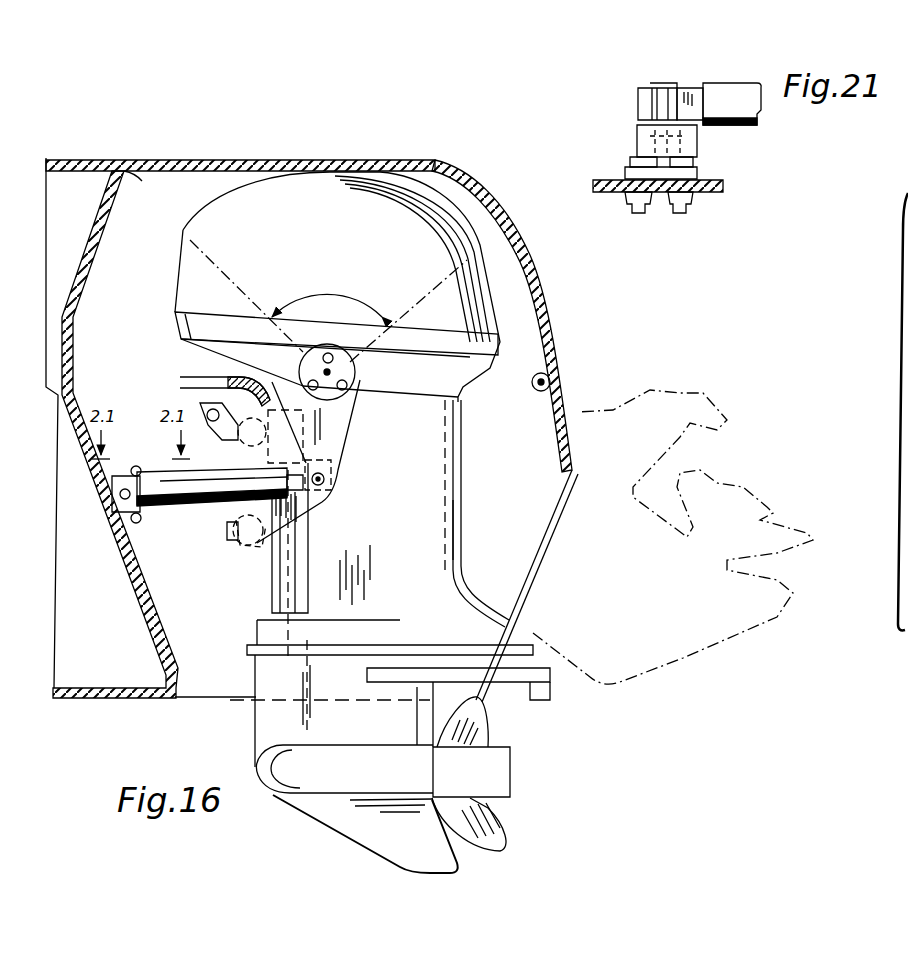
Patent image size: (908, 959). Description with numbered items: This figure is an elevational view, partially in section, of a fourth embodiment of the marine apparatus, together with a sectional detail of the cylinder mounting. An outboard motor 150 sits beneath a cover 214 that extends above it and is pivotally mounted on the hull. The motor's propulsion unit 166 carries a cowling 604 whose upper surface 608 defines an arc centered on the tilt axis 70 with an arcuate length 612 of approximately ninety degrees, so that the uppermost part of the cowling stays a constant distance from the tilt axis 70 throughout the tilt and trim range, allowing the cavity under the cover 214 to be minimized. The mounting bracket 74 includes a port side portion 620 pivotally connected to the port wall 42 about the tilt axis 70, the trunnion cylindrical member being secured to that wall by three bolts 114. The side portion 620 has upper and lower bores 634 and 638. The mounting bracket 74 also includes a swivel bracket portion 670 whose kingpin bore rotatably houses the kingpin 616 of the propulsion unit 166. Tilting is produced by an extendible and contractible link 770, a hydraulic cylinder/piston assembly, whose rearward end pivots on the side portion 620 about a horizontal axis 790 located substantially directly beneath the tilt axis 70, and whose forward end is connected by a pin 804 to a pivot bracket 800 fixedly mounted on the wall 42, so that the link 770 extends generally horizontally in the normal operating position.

In FIG. 16, the cover 214 is at (300, 162).
In FIG. 16, the upper surface 608 is at (450, 215).
In FIG. 16, the arcuate length 612 is at (352, 310).
In FIG. 16, the cowling 604 is at (460, 298).
In FIG. 16, the tilt axis 70 is at (350, 360).
In FIG. 16, the bolt 114 is at (305, 376).
In FIG. 16, the port side portion 620 is at (343, 414).
In FIG. 16, the outboard motor 150 is at (465, 466).
In FIG. 16, the propulsion unit 166 is at (465, 520).
In FIG. 16, the horizontal axis 790 is at (332, 480).
In FIG. 16, the upper bore 634 is at (249, 438).
In FIG. 16, the port extendible and contractible link 770 is at (198, 496).
In FIG. 21, the port extendible and contractible link 770 is at (740, 86).
In FIG. 16, the pivot bracket 800 is at (135, 470).
In FIG. 21, the pivot bracket 800 is at (637, 138).
In FIG. 16, the mounting bracket 74 is at (222, 536).
In FIG. 16, the lower bore 638 is at (236, 547).
In FIG. 16, the kingpin 616 is at (270, 580).
In FIG. 16, the swivel bracket portion 670 is at (308, 529).
In FIG. 21, the pin 804 is at (638, 106).
In FIG. 21, the port inner wall 42 is at (702, 181).